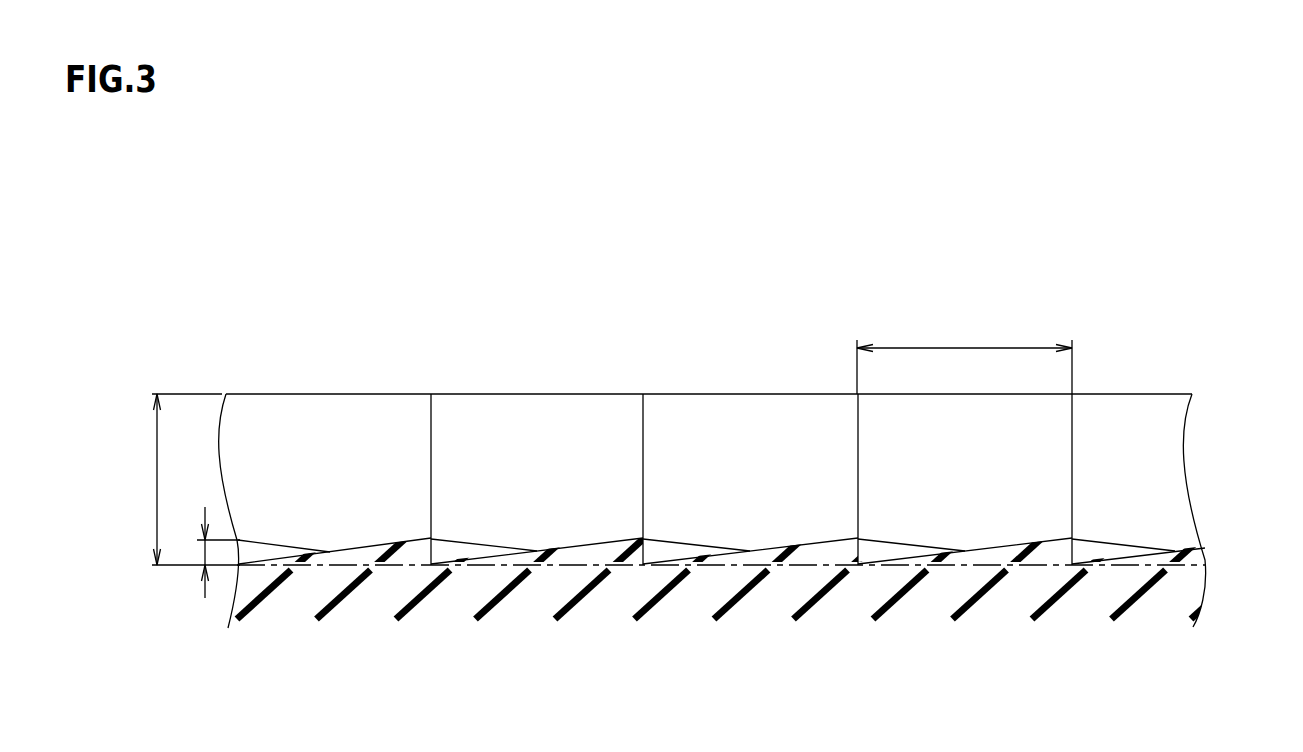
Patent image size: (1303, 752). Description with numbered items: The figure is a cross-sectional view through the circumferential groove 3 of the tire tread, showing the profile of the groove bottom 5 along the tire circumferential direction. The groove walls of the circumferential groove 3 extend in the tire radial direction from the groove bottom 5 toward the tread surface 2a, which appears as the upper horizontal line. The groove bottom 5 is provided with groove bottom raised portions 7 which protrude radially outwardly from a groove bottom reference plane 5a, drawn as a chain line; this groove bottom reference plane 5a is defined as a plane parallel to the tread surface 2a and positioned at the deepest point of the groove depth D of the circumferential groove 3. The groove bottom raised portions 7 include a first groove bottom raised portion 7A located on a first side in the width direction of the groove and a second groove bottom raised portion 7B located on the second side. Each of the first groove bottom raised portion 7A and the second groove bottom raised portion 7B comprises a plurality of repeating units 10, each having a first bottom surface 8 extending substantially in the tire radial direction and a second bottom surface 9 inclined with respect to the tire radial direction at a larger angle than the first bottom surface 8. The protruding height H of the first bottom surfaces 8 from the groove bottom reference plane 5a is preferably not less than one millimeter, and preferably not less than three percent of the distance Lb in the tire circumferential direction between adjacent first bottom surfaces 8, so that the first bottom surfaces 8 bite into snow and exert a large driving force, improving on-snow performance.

The circumferential groove 3 is at (1103, 327).
The tread surface 2a is at (1150, 393).
The groove bottom 5 is at (817, 542).
The groove bottom reference plane 5a is at (1130, 562).
The groove bottom raised portions 7 is at (721, 415).
The first groove bottom raised portion 7A is at (563, 558).
The second groove bottom raised portion 7B is at (457, 552).
The first bottom surface 8 is at (646, 550).
The second bottom surface 9 is at (595, 542).
The repeating unit 10 is at (688, 320).
The distance Lb is at (964, 356).
The groove depth D is at (185, 479).
The protruding height H is at (209, 552).